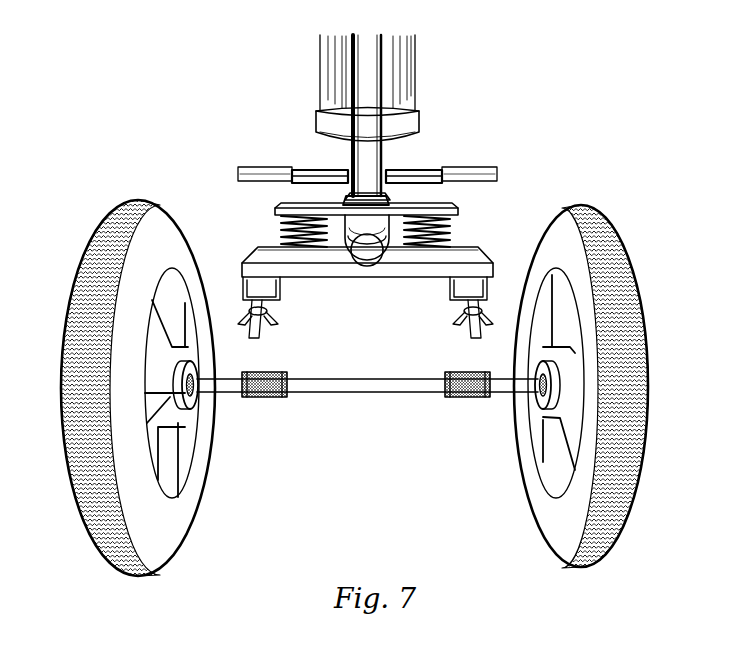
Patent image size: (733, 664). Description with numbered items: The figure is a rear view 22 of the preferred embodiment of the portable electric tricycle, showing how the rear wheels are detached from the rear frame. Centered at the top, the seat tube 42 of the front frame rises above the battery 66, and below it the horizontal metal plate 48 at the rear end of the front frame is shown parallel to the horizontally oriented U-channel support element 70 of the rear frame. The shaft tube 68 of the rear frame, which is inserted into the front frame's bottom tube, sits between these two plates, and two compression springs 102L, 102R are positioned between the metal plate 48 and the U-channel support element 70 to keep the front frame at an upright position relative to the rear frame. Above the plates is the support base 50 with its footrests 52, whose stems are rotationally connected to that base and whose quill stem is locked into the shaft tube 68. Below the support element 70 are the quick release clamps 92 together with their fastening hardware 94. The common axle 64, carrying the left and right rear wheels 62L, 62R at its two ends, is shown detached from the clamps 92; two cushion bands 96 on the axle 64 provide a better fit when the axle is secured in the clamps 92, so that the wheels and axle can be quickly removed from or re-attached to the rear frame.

The rear view 22 is at (211, 82).
The battery 66 is at (318, 80).
The seat tube 42 is at (385, 98).
The support base 50 is at (428, 169).
The footrest 52 is at (237, 172).
The horizontal metal plate 48 is at (276, 208).
The left compression spring 102L is at (280, 230).
The right compression spring 102R is at (452, 234).
The shaft tube 68 is at (368, 268).
The U-channel support element 70 is at (244, 262).
The bracket with wing nut 94 is at (497, 318).
The axle 64 is at (367, 393).
The cushion band 96 is at (258, 399).
The left rear wheel 62L is at (70, 273).
The right rear wheel 62R is at (629, 526).
The quick release clamp 92 is at (585, 210).